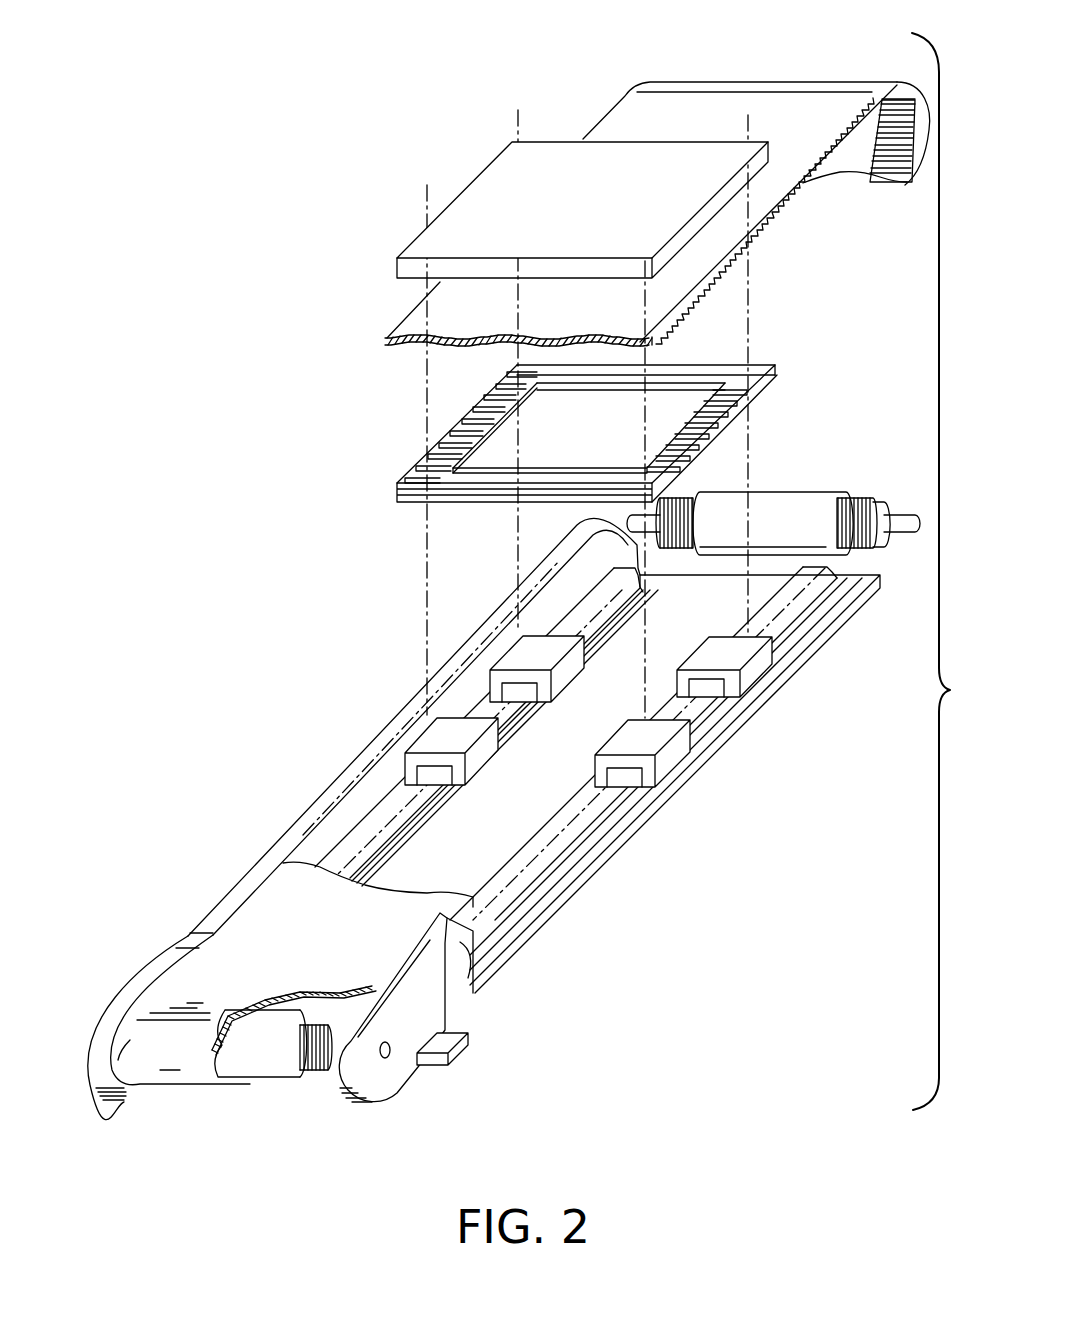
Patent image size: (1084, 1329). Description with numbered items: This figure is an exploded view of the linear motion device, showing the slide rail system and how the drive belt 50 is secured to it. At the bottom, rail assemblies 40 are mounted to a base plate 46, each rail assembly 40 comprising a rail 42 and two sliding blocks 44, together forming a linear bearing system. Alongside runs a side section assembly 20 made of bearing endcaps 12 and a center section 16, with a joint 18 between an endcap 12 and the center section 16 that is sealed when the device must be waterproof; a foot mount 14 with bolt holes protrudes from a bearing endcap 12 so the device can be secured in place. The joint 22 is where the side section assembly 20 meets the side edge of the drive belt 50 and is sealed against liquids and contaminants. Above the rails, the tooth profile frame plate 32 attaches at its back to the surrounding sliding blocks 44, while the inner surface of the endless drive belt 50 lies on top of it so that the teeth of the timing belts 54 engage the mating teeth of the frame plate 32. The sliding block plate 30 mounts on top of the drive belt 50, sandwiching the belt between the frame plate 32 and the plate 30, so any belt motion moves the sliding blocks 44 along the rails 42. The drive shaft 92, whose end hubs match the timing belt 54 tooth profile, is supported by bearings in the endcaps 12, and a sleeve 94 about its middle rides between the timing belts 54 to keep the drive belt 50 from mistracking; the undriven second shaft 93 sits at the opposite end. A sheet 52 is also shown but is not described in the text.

The bearing endcap 12 is at (107, 1102).
The foot mount 14 is at (455, 1048).
The center section 16 is at (256, 853).
The joint 18 is at (188, 930).
The side section assembly 20 is at (480, 843).
The joint 22 is at (153, 984).
The sliding block plate 30 is at (395, 257).
The tooth profile frame plate 32 is at (396, 494).
The rail assembly 40 is at (603, 826).
The rail 42 is at (396, 835).
The sliding block 44 is at (567, 688).
The base plate 46 is at (833, 628).
The drive belt 50 is at (760, 73).
The sheet 52 is at (388, 341).
The timing belt 54 is at (884, 184).
The drive shaft 92 is at (880, 500).
The second shaft 93 is at (280, 1058).
The sleeve 94 is at (803, 490).